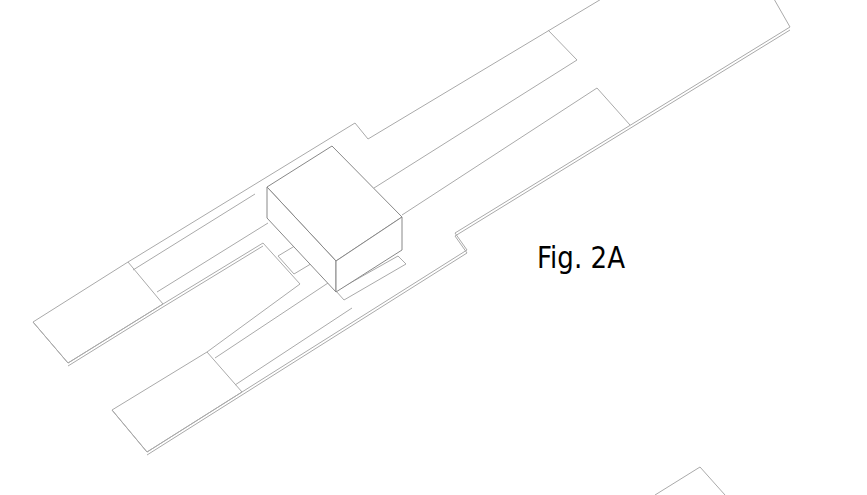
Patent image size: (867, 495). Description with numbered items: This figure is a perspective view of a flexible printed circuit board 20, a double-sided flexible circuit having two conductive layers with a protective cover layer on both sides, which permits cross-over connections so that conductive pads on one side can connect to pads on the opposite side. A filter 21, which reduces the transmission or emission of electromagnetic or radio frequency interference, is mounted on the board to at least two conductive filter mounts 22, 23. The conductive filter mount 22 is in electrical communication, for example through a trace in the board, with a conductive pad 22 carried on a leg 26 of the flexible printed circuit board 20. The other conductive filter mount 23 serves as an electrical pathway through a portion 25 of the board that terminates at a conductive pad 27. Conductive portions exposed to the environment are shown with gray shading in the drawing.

The flexible printed circuit board 20 is at (204, 97).
The filter 21 is at (293, 209).
The conductive filter mount 22 is at (331, 288).
The conductive filter mount 23 is at (263, 278).
The portion 25 is at (411, 227).
The leg 26 is at (242, 312).
The conductive pad 27 is at (643, 481).